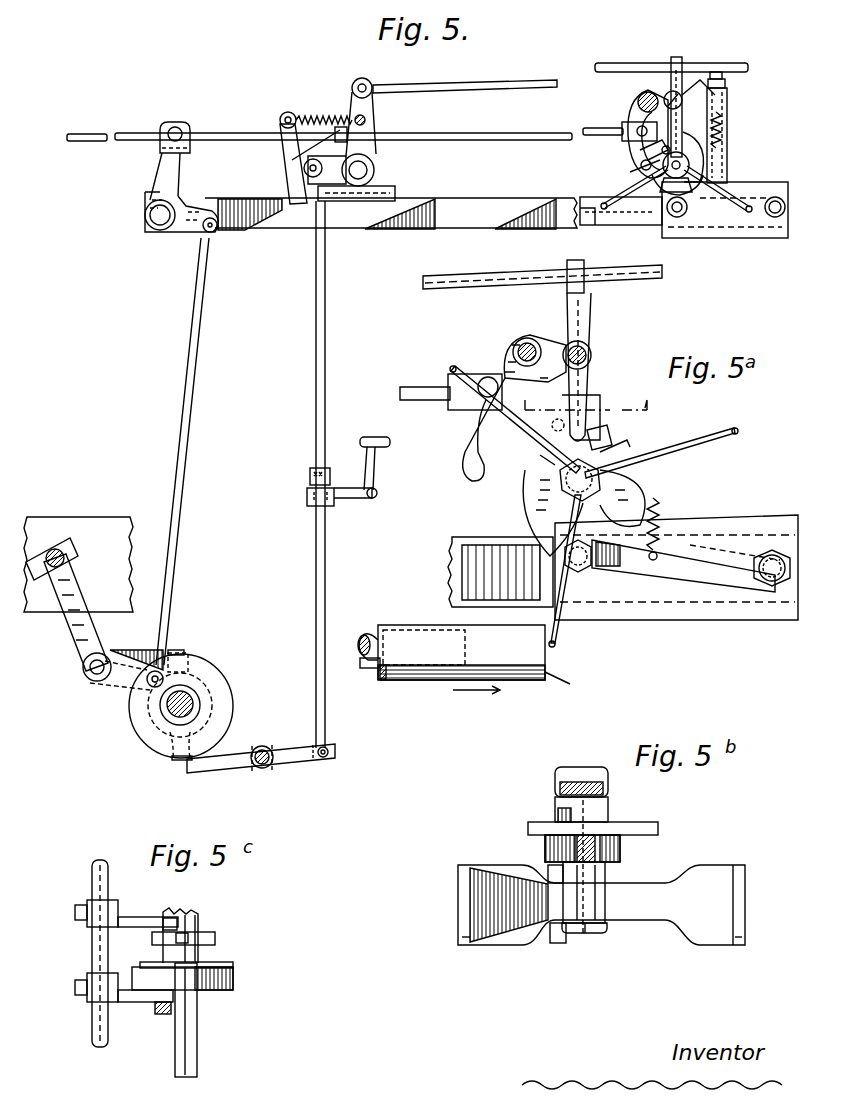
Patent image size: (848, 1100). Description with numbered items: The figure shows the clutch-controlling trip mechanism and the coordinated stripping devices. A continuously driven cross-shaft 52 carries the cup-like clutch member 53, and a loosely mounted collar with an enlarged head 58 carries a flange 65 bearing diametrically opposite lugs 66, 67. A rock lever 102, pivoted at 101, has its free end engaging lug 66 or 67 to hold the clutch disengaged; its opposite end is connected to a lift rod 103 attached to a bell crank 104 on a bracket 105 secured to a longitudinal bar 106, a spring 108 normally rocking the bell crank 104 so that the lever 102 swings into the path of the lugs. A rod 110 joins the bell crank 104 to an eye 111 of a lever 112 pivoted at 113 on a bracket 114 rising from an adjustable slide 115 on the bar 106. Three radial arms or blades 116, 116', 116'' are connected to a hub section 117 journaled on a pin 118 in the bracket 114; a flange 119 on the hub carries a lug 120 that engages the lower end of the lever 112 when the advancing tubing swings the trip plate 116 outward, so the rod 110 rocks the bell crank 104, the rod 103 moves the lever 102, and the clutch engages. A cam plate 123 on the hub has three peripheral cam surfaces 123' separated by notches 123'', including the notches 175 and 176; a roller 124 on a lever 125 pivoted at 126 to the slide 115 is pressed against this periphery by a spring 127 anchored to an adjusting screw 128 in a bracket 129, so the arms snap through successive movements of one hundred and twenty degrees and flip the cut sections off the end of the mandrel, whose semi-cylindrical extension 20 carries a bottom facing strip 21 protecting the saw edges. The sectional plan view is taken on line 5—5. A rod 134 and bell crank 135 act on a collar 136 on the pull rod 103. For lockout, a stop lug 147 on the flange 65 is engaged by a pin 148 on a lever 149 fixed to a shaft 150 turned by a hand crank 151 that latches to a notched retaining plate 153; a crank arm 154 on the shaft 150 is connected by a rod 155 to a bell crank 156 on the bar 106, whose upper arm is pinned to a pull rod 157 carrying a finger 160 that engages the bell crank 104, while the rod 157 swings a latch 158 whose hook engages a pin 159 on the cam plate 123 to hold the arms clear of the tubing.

In FIG. 5, the pull rod 157 is at (236, 133).
In FIG. 5A, the pull rod 157 is at (428, 385).
In FIG. 5, the bell crank 156 is at (162, 172).
In FIG. 5, the finger 160 is at (288, 152).
In FIG. 5, the spring 108 is at (334, 113).
In FIG. 5, the bell crank 104 is at (372, 154).
In FIG. 5, the bracket 105 is at (380, 185).
In FIG. 5, the rod 110 is at (482, 70).
In FIG. 5A, the rod 110 is at (492, 275).
In FIG. 5, the bar 106 is at (391, 200).
In FIG. 5, the lift rod 103 is at (315, 580).
In FIG. 5, the collar 136 is at (308, 472).
In FIG. 5, the rod 134 is at (377, 426).
In FIG. 5, the bell crank 135 is at (340, 487).
In FIG. 5, the rod 155 is at (196, 397).
In FIG. 5C, the rod 155 is at (163, 1015).
In FIG. 5, the notched retaining plate 153 is at (48, 545).
In FIG. 5, the hand crank 151 is at (78, 630).
In FIG. 5, the shaft 150 is at (90, 672).
In FIG. 5C, the shaft 150 is at (92, 880).
In FIG. 5, the crank arm 154 is at (120, 688).
In FIG. 5C, the crank arm 154 is at (135, 1003).
In FIG. 5, the lever 149 is at (138, 643).
In FIG. 5C, the lever 149 is at (140, 916).
In FIG. 5, the pin 148 is at (162, 672).
In FIG. 5C, the pin 148 is at (163, 927).
In FIG. 5, the lug 67 is at (188, 652).
In FIG. 5C, the lug 67 is at (188, 933).
In FIG. 5, the stop lug 147 is at (198, 665).
In FIG. 5C, the stop lug 147 is at (192, 914).
In FIG. 5, the cross-shaft 52 is at (192, 703).
In FIG. 5C, the cross-shaft 52 is at (198, 1047).
In FIG. 5, the flange 65 is at (215, 718).
In FIG. 5C, the flange 65 is at (216, 940).
In FIG. 5, the clutch member 53 is at (146, 741).
In FIG. 5C, the clutch member 53 is at (235, 978).
In FIG. 5, the lug 66 is at (176, 762).
In FIG. 5, the rock lever 102 is at (300, 760).
In FIG. 5, the pivot 101 is at (262, 770).
In FIG. 5C, the enlarged head 58 is at (232, 963).
In FIG. 5, the lever 112 is at (684, 90).
In FIG. 5A, the lever 112 is at (590, 312).
In FIG. 5B, the lever 112 is at (545, 848).
In FIG. 5, the pivot 113 is at (664, 95).
In FIG. 5A, the pivot 113 is at (592, 352).
In FIG. 5, the bracket 114 is at (640, 118).
In FIG. 5A, the bracket 114 is at (594, 395).
In FIG. 5B, the bracket 114 is at (610, 792).
In FIG. 5, the adjusting screw 128 is at (722, 106).
In FIG. 5, the bracket 129 is at (728, 116).
In FIG. 5, the spring 127 is at (728, 132).
In FIG. 5A, the spring 127 is at (666, 512).
In FIG. 5, the cam surfaces 123' is at (730, 156).
In FIG. 5A, the cam surfaces 123' is at (637, 446).
In FIG. 5, the cam plate 123 is at (713, 170).
In FIG. 5A, the cam plate 123 is at (557, 513).
In FIG. 5B, the cam plate 123 is at (615, 823).
In FIG. 5, the notches 123'' is at (682, 205).
In FIG. 5A, the notches 123'' is at (500, 563).
In FIG. 5, the trip plate 116 is at (689, 189).
In FIG. 5A, the trip plate 116 is at (578, 571).
In FIG. 5B, the trip plate 116 is at (543, 955).
In FIG. 5, the radial arm 116' is at (733, 65).
In FIG. 5A, the radial arm 116' is at (673, 453).
In FIG. 5B, the radial arm 116' is at (714, 955).
In FIG. 5, the radial arm 116'' is at (581, 228).
In FIG. 5A, the radial arm 116'' is at (515, 419).
In FIG. 5B, the radial arm 116'' is at (457, 957).
In FIG. 5, the swinging latch 158 is at (640, 150).
In FIG. 5A, the swinging latch 158 is at (448, 430).
In FIG. 5, the lug 120 is at (641, 166).
In FIG. 5A, the lug 120 is at (612, 435).
In FIG. 5B, the lug 120 is at (622, 858).
In FIG. 5, the pin 159 is at (645, 170).
In FIG. 5A, the pin 159 is at (556, 418).
In FIG. 5B, the pin 159 is at (556, 813).
In FIG. 5, the pin 118 is at (660, 185).
In FIG. 5A, the pin 118 is at (560, 485).
In FIG. 5B, the pin 118 is at (598, 935).
In FIG. 5, the slide 115 is at (742, 238).
In FIG. 5A, the slide 115 is at (705, 620).
In FIG. 5, the roller 124 is at (682, 218).
In FIG. 5A, the roller 124 is at (572, 572).
In FIG. 5, the lever 125 is at (730, 222).
In FIG. 5A, the lever 125 is at (700, 555).
In FIG. 5, the pivot 126 is at (776, 218).
In FIG. 5A, the pivot 126 is at (772, 586).
In FIG. 5A, the eye 111 is at (568, 290).
In FIG. 5A, the section line 5 is at (588, 401).
In FIG. 5A, the notch 176 is at (530, 458).
In FIG. 5A, the flange 119 is at (616, 452).
In FIG. 5B, the flange 119 is at (620, 846).
In FIG. 5A, the notch 175 is at (620, 568).
In FIG. 5A, the semi-cylindrical extension 20 is at (378, 637).
In FIG. 5A, the bottom facing strip 21 is at (370, 670).
In FIG. 5B, the hub section 117 is at (605, 878).